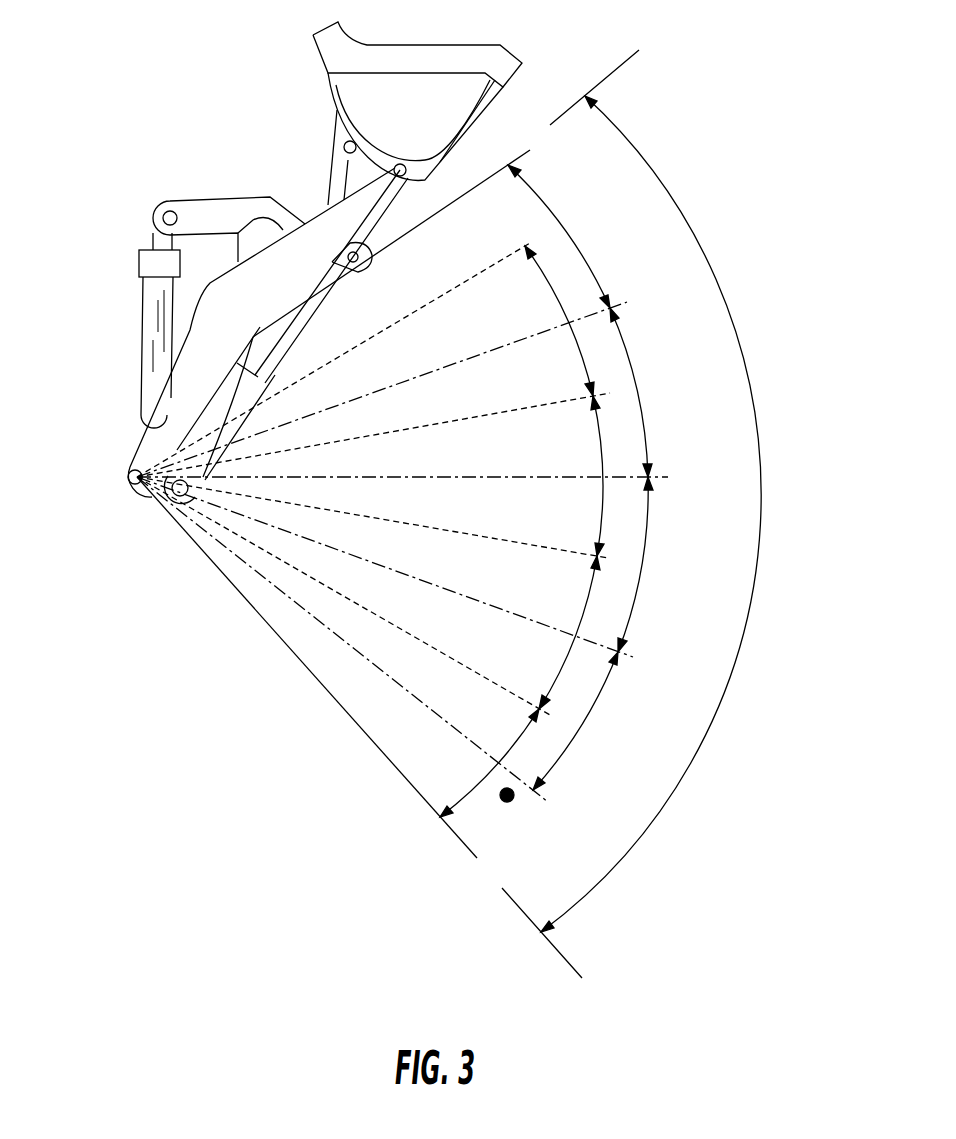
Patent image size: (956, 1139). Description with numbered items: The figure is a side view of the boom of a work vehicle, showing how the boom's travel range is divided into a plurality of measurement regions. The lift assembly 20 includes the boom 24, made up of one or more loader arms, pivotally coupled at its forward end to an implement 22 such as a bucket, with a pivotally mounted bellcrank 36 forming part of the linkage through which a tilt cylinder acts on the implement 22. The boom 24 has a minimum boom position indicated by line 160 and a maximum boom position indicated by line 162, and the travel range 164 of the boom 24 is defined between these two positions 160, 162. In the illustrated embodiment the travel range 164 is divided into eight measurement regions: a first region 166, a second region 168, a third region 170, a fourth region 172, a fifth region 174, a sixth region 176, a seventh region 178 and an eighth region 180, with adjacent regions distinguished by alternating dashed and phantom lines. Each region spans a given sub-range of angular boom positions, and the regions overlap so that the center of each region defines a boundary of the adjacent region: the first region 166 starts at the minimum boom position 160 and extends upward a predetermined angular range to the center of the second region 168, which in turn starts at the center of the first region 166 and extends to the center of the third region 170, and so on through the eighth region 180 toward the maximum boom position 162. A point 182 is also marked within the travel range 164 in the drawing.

The lift assembly 20 is at (125, 152).
The implement 22 is at (318, 45).
The boom 24 is at (182, 400).
The bellcrank 36 is at (232, 202).
The minimum boom position line 160 is at (385, 765).
The maximum boom position line 162 is at (503, 165).
The travel range 164 is at (766, 495).
The first measurement region 166 is at (477, 781).
The second measurement region 168 is at (594, 718).
The third measurement region 170 is at (587, 608).
The fourth measurement region 172 is at (646, 553).
The fifth measurement region 174 is at (600, 490).
The sixth measurement region 176 is at (648, 397).
The seventh measurement region 178 is at (545, 288).
The eighth measurement region 180 is at (583, 236).
The position indicator point 182 is at (509, 806).